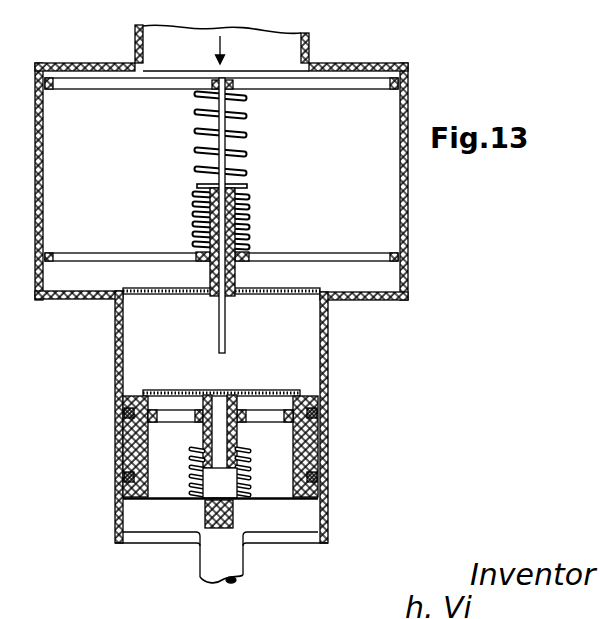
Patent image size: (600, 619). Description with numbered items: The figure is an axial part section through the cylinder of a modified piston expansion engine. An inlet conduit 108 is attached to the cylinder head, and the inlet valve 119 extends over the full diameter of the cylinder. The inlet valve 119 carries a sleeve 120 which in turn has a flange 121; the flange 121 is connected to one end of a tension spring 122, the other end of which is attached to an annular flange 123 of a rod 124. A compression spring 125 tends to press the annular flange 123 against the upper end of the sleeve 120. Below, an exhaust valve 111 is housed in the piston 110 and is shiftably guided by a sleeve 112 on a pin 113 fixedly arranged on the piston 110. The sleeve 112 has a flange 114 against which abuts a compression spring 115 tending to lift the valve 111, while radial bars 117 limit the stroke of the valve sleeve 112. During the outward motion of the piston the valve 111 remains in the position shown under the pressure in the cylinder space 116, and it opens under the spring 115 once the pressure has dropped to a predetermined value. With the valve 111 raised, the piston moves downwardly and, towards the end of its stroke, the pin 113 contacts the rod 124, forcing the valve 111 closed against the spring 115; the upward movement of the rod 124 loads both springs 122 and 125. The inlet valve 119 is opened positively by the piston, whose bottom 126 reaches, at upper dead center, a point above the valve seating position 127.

The inlet conduit 108 is at (155, 40).
The piston 110 is at (135, 457).
The exhaust valve 111 is at (268, 390).
The sleeve 112 is at (238, 434).
The pin 113 is at (221, 433).
The flange 114 is at (200, 453).
The compression spring 115 is at (247, 474).
The cylinder space 116 is at (303, 333).
The radial bars 117 is at (267, 419).
The inlet valve 119 is at (165, 292).
The sleeve 120 is at (235, 268).
The flange 121 is at (200, 247).
The tension spring 122 is at (247, 208).
The annular flange 123 is at (247, 186).
The rod 124 is at (218, 141).
The compression spring 125 is at (242, 115).
The bottom of the piston 126 is at (135, 390).
The valve seating position 127 is at (327, 292).